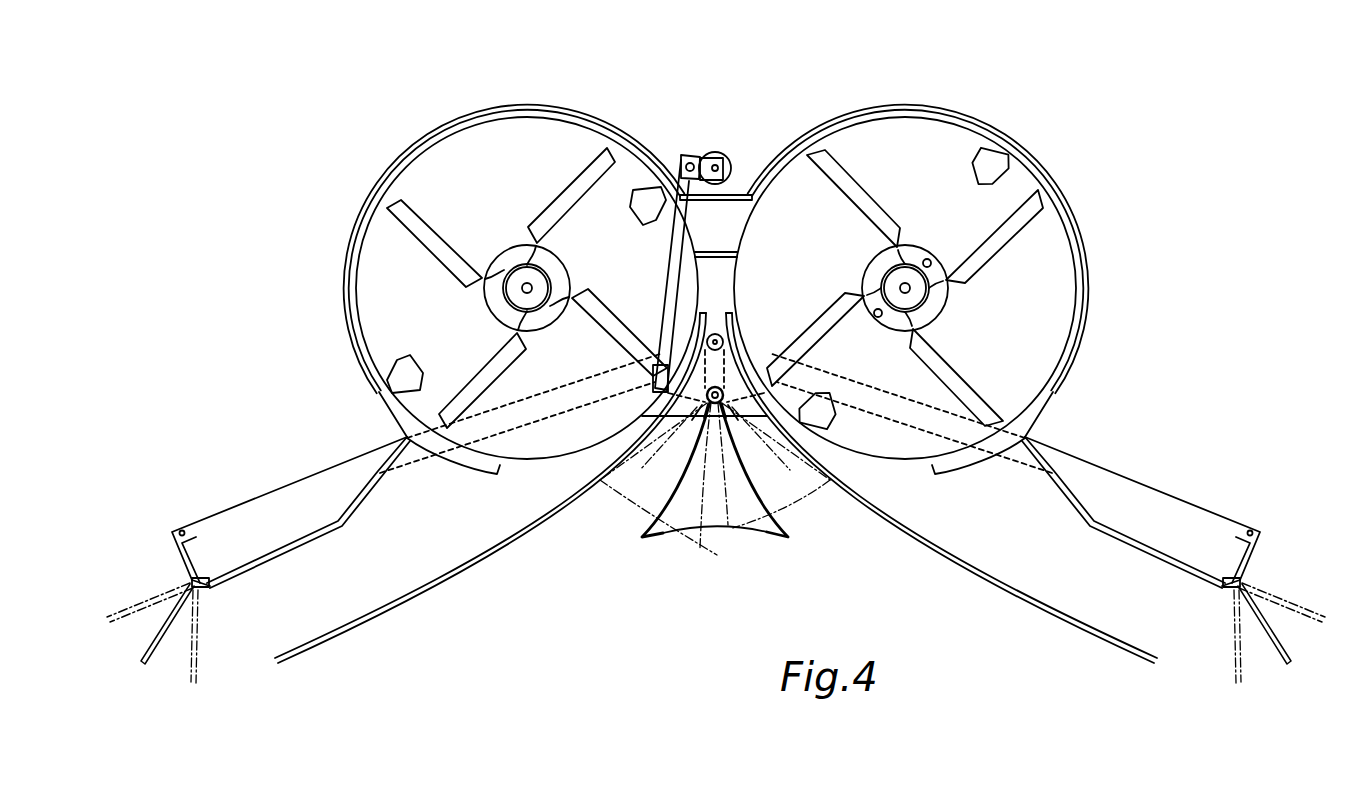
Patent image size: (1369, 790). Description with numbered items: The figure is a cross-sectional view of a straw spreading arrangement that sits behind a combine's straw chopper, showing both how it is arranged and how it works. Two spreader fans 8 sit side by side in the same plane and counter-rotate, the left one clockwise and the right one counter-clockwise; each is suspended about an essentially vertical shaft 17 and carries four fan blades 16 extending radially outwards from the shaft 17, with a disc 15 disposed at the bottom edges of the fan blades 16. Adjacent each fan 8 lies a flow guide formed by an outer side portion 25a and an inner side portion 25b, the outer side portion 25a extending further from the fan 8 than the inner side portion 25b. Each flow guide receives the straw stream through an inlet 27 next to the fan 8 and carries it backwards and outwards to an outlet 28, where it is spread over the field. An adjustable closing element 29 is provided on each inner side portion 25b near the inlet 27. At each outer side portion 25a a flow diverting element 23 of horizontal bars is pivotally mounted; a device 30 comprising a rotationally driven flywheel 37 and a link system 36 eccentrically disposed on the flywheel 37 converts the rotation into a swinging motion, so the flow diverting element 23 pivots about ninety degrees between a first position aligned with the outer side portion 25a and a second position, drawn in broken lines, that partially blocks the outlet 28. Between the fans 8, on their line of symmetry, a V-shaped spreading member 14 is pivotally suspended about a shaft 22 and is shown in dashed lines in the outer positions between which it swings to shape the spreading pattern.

The spreader fan 8 is at (556, 108).
The spreading member 14 is at (660, 534).
The disc 15 is at (578, 153).
The fan blade 16 is at (400, 202).
The shaft 17 is at (527, 288).
The shaft 22 is at (745, 360).
The flow diverting element 23 is at (148, 655).
The outer side portion 25a is at (250, 556).
The inner side portion 25b is at (408, 598).
The inlet 27 is at (407, 437).
The outlet 28 is at (265, 606).
The adjustable closing element 29 is at (640, 455).
The device for imparting a swinging motion 30 is at (717, 134).
The link system 36 is at (684, 156).
The flywheel 37 is at (730, 152).